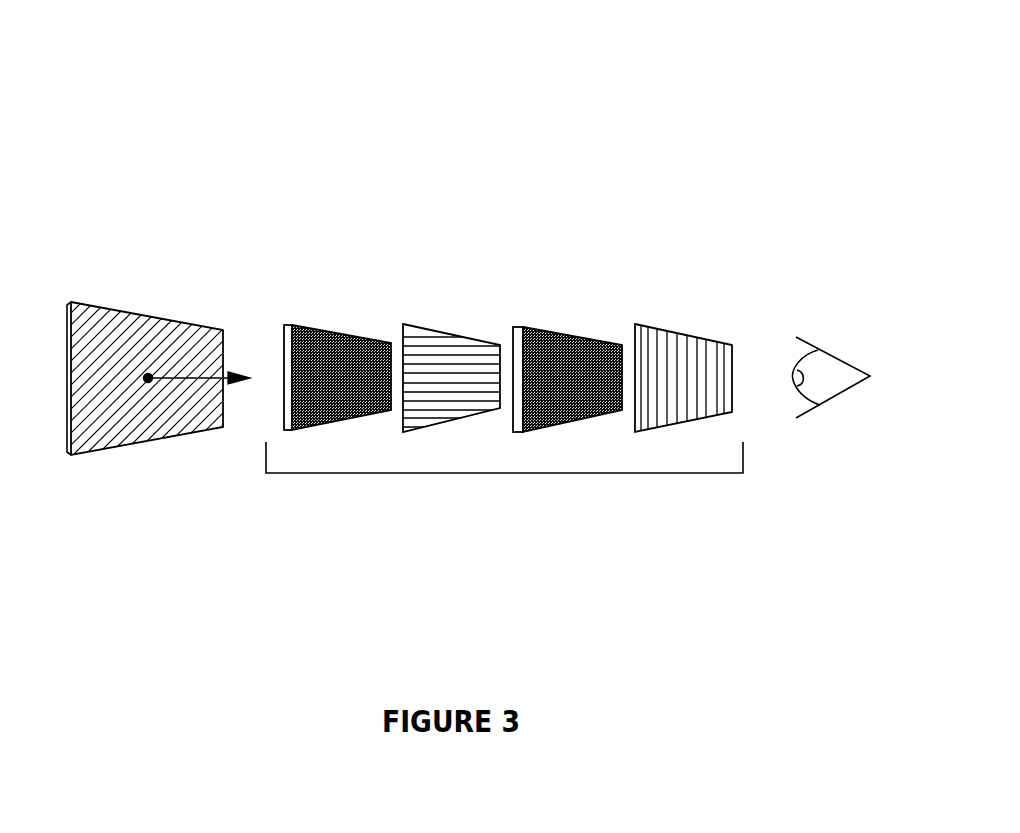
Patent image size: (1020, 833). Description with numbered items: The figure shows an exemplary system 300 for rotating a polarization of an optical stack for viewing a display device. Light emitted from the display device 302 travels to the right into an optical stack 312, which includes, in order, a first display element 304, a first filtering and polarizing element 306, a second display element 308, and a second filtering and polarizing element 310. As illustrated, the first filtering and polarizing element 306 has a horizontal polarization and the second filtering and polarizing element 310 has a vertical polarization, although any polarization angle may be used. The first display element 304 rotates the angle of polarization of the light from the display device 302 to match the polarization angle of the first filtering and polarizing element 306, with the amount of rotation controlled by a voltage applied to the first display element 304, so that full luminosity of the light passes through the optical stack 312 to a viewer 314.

The system 300 is at (813, 97).
The display device 302 is at (130, 310).
The first display element 304 is at (323, 330).
The first filtering and polarizing element 306 is at (448, 335).
The second display element 308 is at (558, 332).
The second filtering and polarizing element 310 is at (682, 333).
The optical stack 312 is at (512, 473).
The viewer 314 is at (832, 353).